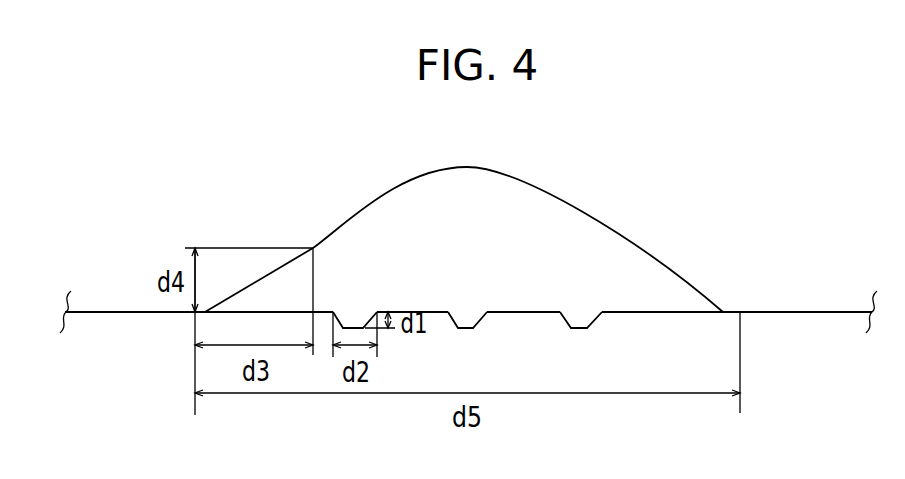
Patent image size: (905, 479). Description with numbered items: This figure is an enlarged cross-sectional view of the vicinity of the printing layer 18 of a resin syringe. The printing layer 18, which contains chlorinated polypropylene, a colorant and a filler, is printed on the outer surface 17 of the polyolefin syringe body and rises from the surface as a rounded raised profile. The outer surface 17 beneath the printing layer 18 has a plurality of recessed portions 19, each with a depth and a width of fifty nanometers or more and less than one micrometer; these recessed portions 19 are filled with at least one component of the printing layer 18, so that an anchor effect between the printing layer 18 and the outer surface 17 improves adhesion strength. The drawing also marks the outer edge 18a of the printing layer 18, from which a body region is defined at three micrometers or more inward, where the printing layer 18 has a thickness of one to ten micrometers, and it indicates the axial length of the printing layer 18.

The outer surface 17 is at (766, 311).
The printing layer 18 is at (575, 207).
The outer edge 18a is at (207, 309).
The recessed portions 19 is at (569, 322).